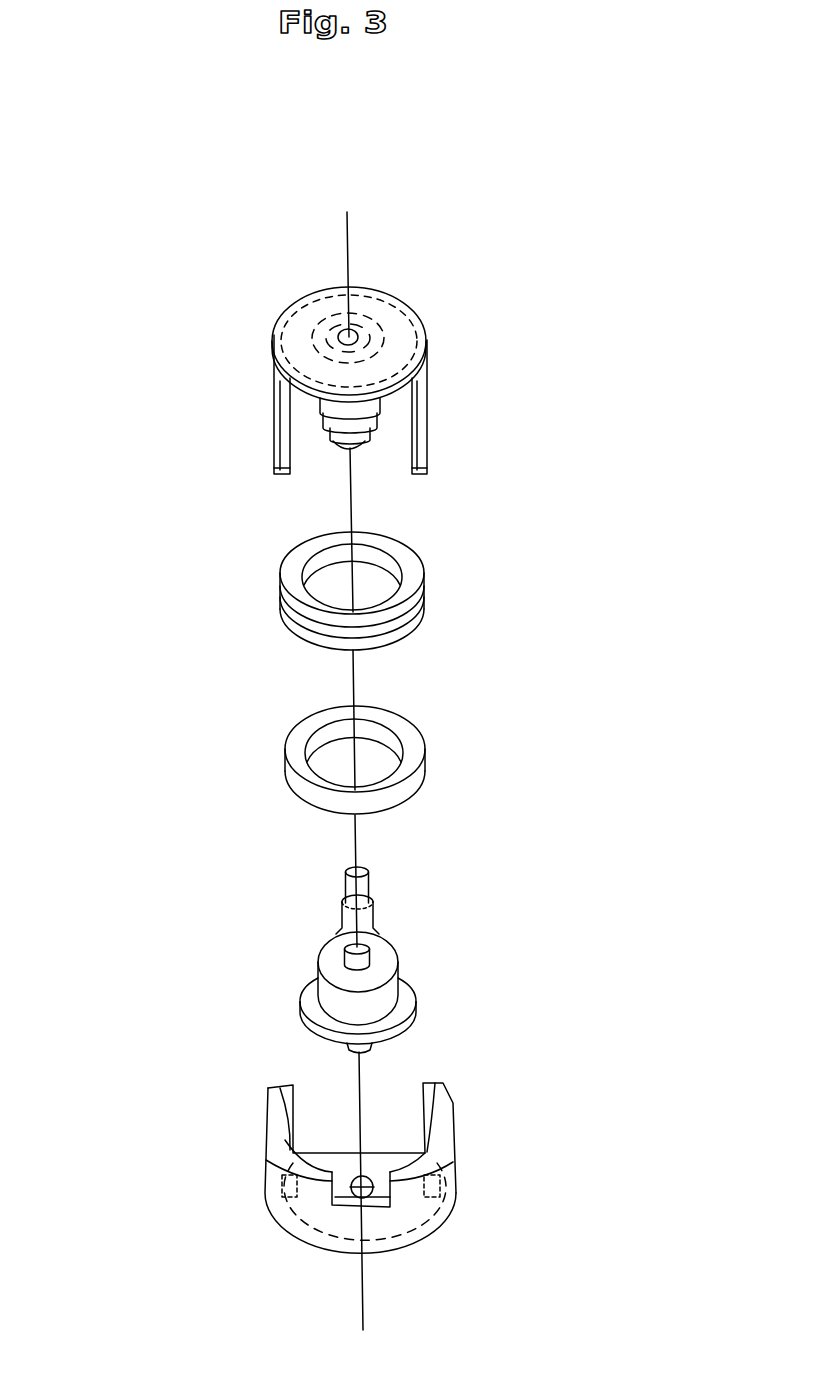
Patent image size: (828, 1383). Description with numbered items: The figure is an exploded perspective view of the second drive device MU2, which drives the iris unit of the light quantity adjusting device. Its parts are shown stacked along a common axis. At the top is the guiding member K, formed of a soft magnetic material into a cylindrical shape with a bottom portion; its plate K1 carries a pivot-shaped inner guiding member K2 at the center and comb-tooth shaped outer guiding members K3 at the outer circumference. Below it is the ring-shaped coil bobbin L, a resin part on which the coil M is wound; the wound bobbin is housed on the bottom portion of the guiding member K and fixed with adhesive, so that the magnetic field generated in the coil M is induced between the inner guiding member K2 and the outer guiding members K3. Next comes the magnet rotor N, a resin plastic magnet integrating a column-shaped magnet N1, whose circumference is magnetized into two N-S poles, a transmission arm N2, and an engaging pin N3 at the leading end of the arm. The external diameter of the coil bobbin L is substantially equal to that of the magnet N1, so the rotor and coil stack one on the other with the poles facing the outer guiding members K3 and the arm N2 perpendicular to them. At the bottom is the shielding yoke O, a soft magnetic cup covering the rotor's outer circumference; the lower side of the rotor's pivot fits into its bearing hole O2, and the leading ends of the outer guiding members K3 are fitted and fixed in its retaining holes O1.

The second drive device MU2 is at (487, 347).
The guiding member K is at (293, 327).
The cap top plate K1 is at (275, 358).
The inner guiding member K2 is at (362, 413).
The outer guiding members K3 is at (278, 431).
The coil bobbin L is at (301, 571).
The coil M is at (301, 729).
The magnet rotor N is at (331, 964).
The magnet N1 is at (387, 995).
The transmission arm N2 is at (373, 927).
The engaging pin N3 is at (370, 887).
The shielding yoke O is at (274, 1124).
The retaining holes O1 is at (440, 1187).
The bearing hole O2 is at (348, 1191).